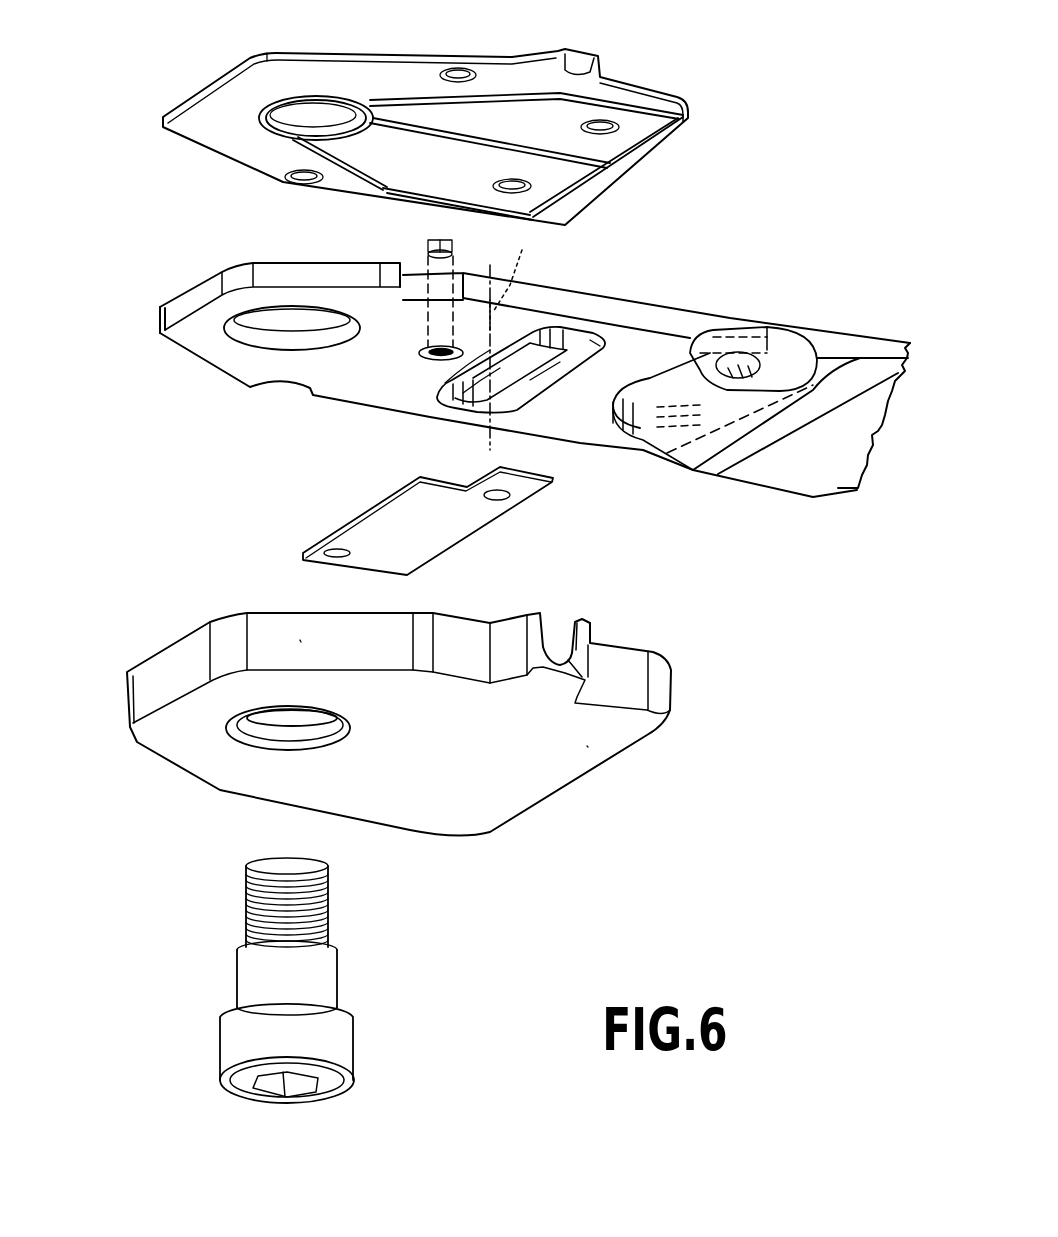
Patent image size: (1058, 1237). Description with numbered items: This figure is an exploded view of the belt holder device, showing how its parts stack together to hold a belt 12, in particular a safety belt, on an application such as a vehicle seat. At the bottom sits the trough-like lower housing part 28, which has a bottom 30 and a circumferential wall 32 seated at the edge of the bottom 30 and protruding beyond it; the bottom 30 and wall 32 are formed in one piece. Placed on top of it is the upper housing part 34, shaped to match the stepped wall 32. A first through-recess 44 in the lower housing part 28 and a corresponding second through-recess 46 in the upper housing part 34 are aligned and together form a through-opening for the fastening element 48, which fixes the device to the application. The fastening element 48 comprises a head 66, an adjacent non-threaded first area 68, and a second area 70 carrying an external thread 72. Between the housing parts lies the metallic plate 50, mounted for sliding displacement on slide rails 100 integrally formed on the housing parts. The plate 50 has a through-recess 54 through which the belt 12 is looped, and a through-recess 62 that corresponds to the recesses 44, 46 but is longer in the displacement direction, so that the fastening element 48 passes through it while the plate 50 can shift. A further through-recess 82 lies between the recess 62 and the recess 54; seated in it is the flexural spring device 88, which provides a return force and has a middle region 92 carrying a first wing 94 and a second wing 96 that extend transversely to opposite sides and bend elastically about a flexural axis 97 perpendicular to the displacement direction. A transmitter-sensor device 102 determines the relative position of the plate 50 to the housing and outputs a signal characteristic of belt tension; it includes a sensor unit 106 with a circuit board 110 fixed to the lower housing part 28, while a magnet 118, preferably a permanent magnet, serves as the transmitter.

The belt 12 is at (793, 467).
The lower housing part 28 is at (399, 709).
The bottom 30 is at (587, 746).
The circumferential wall 32 is at (293, 640).
The upper housing part 34 is at (435, 112).
The first through-recess 44 is at (267, 730).
The second through-recess 46 is at (300, 108).
The fastening element 48 is at (318, 980).
The plate 50 is at (535, 364).
The through-recess 54 is at (683, 387).
The through-recess 62 is at (262, 333).
The head 66 is at (340, 1033).
The first area 68 is at (243, 975).
The second area 70 is at (284, 902).
The external thread 72 is at (327, 902).
The further through-recess 82 is at (553, 372).
The flexural spring device 88 is at (473, 349).
The middle region 92 is at (445, 375).
The first wing 94 is at (463, 393).
The second wing 96 is at (597, 345).
The flexural axis 97 is at (523, 282).
The slide rails 100 is at (490, 92).
The transmitter-sensor device 102 is at (330, 487).
The sensor unit 106 is at (390, 531).
The circuit board 110 is at (432, 535).
The magnet 118 is at (427, 343).